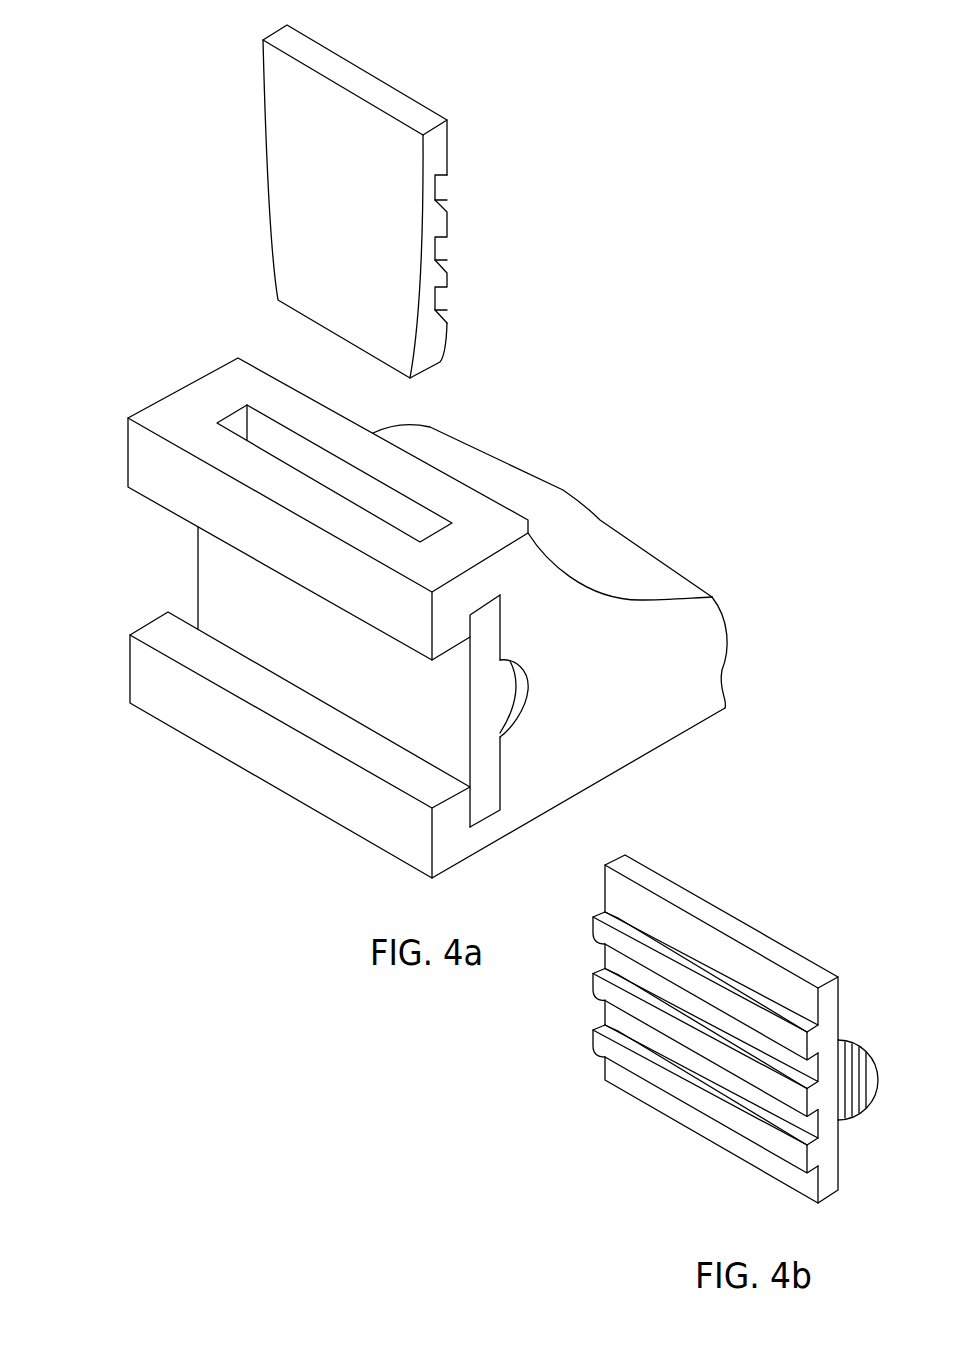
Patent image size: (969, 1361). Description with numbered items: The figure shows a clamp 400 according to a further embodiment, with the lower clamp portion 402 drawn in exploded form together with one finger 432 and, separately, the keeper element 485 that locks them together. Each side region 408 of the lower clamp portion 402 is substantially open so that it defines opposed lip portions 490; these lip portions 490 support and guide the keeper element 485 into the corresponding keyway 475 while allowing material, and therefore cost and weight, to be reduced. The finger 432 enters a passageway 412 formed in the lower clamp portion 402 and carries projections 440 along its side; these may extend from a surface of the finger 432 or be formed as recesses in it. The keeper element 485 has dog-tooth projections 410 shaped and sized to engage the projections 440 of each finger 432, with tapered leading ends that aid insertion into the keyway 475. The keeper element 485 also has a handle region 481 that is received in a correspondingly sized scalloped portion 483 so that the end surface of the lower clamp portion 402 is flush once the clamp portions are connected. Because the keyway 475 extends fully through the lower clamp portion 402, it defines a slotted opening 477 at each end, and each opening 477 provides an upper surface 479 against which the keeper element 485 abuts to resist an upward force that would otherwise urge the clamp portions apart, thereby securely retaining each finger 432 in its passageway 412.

In FIG. 4a, the connector assembly 400 is at (498, 68).
In FIG. 4a, the lower clamp portion 402 is at (162, 807).
In FIG. 4a, the side region 408 is at (126, 455).
In FIG. 4b, the dog-tooth projections 410 is at (763, 1137).
In FIG. 4a, the passageway 412 is at (228, 412).
In FIG. 4a, the finger 432 is at (290, 146).
In FIG. 4a, the projections 440 is at (437, 217).
In FIG. 4a, the keyway 475 is at (400, 715).
In FIG. 4a, the slotted opening 477 is at (503, 772).
In FIG. 4a, the upper surface 479 is at (481, 612).
In FIG. 4b, the handle region 481 is at (862, 1042).
In FIG. 4a, the scalloped portion 483 is at (531, 684).
In FIG. 4b, the keeper element 485 is at (742, 930).
In FIG. 4a, the lip portions 490 is at (163, 510).